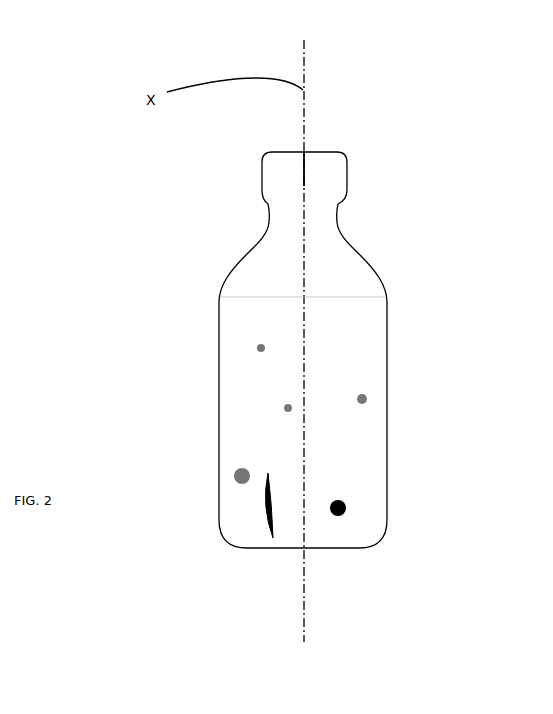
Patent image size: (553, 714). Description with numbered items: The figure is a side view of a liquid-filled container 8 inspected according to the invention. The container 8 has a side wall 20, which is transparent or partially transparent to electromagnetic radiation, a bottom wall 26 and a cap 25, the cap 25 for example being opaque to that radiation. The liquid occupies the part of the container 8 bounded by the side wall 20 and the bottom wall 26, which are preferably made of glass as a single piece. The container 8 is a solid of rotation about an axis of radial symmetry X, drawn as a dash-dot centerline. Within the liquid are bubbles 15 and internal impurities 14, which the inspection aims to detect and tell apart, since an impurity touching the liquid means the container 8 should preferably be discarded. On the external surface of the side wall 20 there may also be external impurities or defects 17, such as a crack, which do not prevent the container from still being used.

The container 8 is at (332, 92).
The side wall 20 is at (217, 332).
The cap 25 is at (323, 176).
The bottom wall 26 is at (281, 549).
The bubbles 15 is at (258, 462).
The external impurities/defects 17 is at (255, 501).
The internal impurities 14 is at (362, 515).